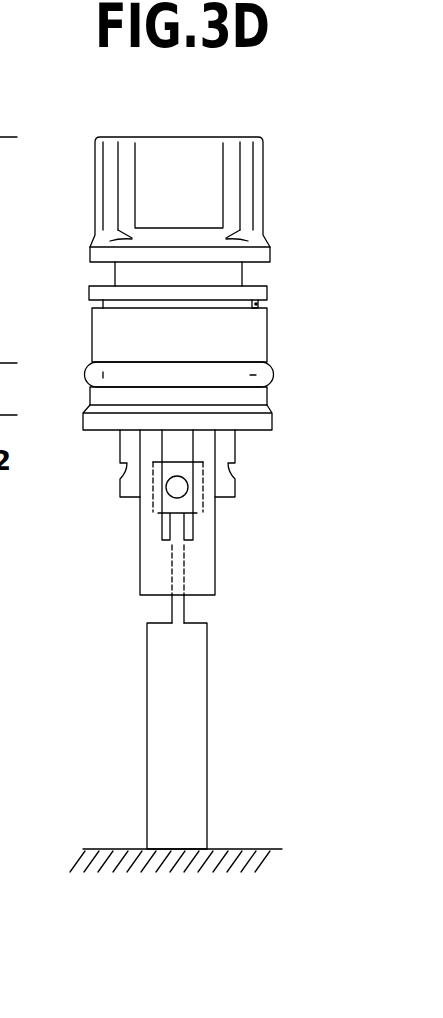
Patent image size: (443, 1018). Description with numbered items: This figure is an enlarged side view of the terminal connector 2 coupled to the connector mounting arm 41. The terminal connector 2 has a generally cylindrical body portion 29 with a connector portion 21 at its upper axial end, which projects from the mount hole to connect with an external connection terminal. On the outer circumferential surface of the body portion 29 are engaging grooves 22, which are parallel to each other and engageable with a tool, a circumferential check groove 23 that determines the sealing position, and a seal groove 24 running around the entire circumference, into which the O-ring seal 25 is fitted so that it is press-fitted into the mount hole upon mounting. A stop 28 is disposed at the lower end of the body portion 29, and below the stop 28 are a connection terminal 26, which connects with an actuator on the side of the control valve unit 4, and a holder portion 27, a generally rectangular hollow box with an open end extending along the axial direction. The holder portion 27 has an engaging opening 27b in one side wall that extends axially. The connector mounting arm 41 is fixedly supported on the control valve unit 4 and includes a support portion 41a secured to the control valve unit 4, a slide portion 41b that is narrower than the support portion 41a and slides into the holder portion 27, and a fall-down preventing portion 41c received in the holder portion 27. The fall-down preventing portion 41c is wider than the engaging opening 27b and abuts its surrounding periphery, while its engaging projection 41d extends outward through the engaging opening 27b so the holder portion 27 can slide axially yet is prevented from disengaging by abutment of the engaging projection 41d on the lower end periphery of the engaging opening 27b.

The terminal connector 2 is at (262, 118).
The connector portion 21 is at (217, 178).
The engaging grooves 22 is at (105, 274).
The check groove 23 is at (262, 305).
The body portion 29 is at (298, 331).
The seal groove 24 is at (275, 371).
The O-ring seal 25 is at (88, 378).
The stop 28 is at (262, 422).
The engaging opening 27b is at (173, 445).
The connection terminal 26 is at (222, 480).
The holder portion 27 is at (229, 539).
The fall-down preventing portion 41c is at (178, 508).
The engaging projection 41d is at (175, 489).
The connector mounting arm 41 is at (229, 752).
The slide portion 41b is at (175, 610).
The support portion 41a is at (183, 715).
The control valve unit 4 is at (240, 880).